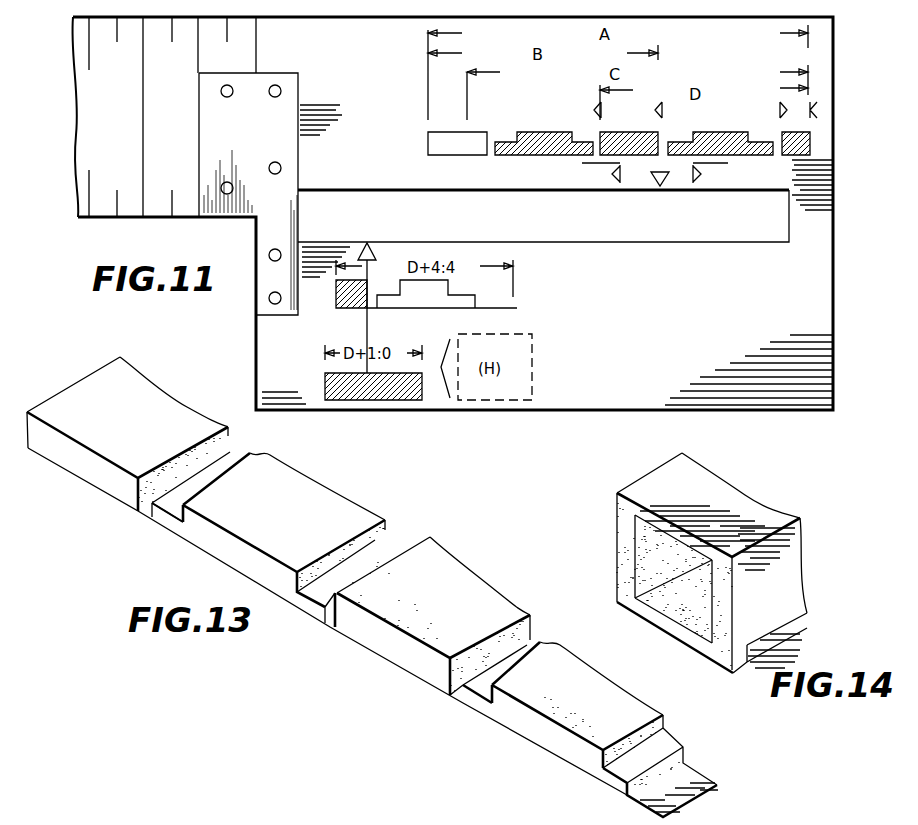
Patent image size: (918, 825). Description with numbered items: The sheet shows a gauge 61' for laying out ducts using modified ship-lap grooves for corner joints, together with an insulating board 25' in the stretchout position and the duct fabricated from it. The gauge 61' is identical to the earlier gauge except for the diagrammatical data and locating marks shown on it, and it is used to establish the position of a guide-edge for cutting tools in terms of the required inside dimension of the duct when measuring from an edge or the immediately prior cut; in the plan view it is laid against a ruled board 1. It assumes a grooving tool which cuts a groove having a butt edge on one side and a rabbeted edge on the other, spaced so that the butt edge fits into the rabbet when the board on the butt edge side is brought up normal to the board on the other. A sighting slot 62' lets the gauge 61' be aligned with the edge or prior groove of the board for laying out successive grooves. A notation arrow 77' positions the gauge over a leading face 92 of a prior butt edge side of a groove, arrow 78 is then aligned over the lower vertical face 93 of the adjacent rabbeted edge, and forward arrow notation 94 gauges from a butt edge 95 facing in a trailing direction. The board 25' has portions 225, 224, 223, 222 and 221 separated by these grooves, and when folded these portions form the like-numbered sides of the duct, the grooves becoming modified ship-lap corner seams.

In FIG. 11, the wooden board / workpiece 1 is at (172, 117).
In FIG. 11, the gauge 61' is at (475, 213).
In FIG. 11, the sighting slot 62' is at (543, 234).
In FIG. 11, the forward arrow notation 94 is at (631, 180).
In FIG. 11, the arrow 78 is at (658, 187).
In FIG. 11, the notation arrow 77' is at (718, 189).
In FIG. 13, the side wall piece 225 is at (130, 452).
In FIG. 14, the side wall piece 225 is at (727, 610).
In FIG. 13, the top wall piece 224 is at (223, 515).
In FIG. 14, the top wall piece 224 is at (650, 518).
In FIG. 13, the leading face of butt edge side 92 is at (370, 565).
In FIG. 13, the butt edge facing in a trailing direction 95 is at (496, 640).
In FIG. 13, the lower vertical face of rabbeted edge 93 is at (325, 620).
In FIG. 13, the side wall piece 223 is at (424, 616).
In FIG. 14, the side wall piece 223 is at (617, 523).
In FIG. 13, the board 25' is at (479, 699).
In FIG. 13, the bottom wall piece 222 is at (583, 725).
In FIG. 14, the bottom wall piece 222 is at (668, 627).
In FIG. 13, the base piece 221 is at (703, 793).
In FIG. 14, the base piece 221 is at (792, 633).